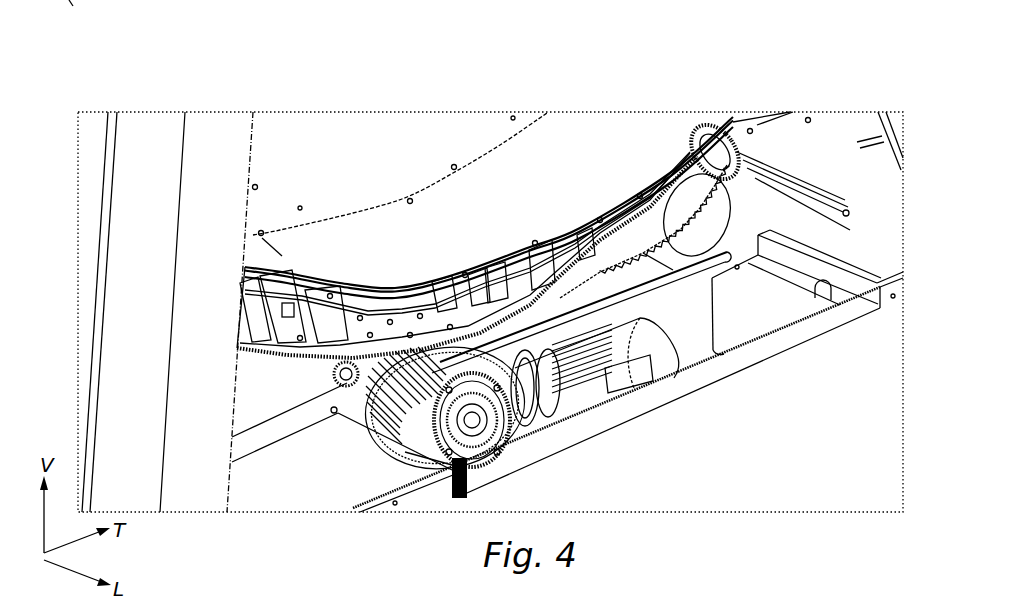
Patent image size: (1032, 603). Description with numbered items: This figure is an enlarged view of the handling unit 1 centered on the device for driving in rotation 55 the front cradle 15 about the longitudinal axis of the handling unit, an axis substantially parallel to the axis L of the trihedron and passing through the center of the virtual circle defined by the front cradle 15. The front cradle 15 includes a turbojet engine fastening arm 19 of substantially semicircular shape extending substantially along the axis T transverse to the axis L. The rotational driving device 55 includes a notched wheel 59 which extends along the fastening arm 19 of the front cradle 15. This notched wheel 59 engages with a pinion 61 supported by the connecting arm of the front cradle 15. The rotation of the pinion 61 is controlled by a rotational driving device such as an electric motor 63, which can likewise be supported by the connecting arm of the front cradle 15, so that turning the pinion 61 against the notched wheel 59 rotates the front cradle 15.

The handling unit 1 is at (850, 86).
The front cradle 15 is at (343, 258).
The turbojet engine fastening arm 19 is at (258, 233).
The device for driving in rotation 55 is at (400, 338).
The notched wheel 59 is at (655, 232).
The pinion 61 is at (335, 410).
The electric motor 63 is at (650, 352).